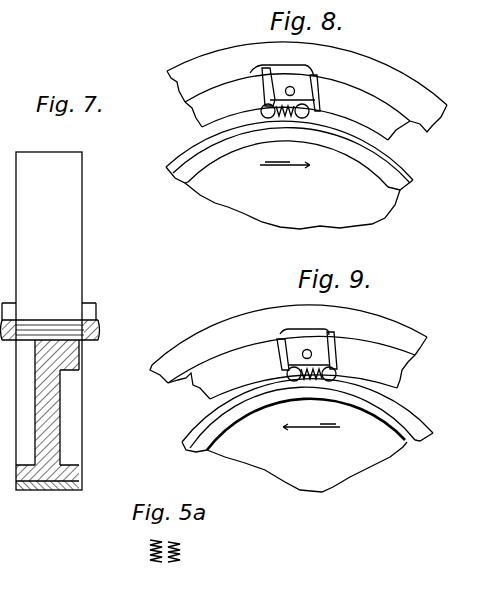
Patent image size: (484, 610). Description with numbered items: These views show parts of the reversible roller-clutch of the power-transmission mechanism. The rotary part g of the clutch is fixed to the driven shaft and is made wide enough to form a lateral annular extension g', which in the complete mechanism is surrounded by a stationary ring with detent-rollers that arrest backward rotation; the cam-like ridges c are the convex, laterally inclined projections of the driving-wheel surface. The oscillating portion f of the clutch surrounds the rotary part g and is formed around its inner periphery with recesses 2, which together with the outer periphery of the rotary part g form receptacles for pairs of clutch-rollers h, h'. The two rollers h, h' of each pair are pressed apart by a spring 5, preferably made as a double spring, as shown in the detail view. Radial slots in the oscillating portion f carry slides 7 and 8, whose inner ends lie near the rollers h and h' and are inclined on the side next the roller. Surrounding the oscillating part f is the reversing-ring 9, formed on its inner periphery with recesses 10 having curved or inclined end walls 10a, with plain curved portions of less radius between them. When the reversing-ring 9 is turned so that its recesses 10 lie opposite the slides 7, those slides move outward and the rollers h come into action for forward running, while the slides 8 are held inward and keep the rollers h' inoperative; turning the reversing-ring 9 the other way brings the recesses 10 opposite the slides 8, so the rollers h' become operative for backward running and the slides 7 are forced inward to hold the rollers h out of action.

In FIG. 7, the rotary part of the clutch g is at (49, 321).
In FIG. 8, the rotary part of the clutch g is at (289, 175).
In FIG. 9, the rotary part of the clutch g is at (307, 435).
In FIG. 7, the lateral annular extension g' is at (30, 501).
In FIG. 7, the cam-like ridges or projections c is at (50, 321).
In FIG. 8, the reversing-ring 9 is at (307, 87).
In FIG. 9, the reversing-ring 9 is at (290, 333).
In FIG. 8, the oscillating portion of the clutch f is at (297, 116).
In FIG. 9, the oscillating portion of the clutch f is at (282, 381).
In FIG. 8, the recesses 10 is at (288, 65).
In FIG. 9, the recesses 10 is at (322, 330).
In FIG. 8, the curved or inclined end walls 10a is at (311, 70).
In FIG. 9, the curved or inclined end walls 10a is at (348, 333).
In FIG. 8, the slides 7 is at (262, 88).
In FIG. 9, the slides 7 is at (277, 352).
In FIG. 8, the slides 8 is at (318, 93).
In FIG. 9, the slides 8 is at (336, 335).
In FIG. 8, the recesses 2 is at (277, 110).
In FIG. 9, the recesses 2 is at (310, 365).
In FIG. 8, the clutch-roller h is at (253, 139).
In FIG. 9, the clutch-roller h is at (282, 401).
In FIG. 8, the clutch-roller h' is at (331, 113).
In FIG. 9, the clutch-roller h' is at (354, 371).
In FIG. 8, the spring 5 is at (278, 118).
In FIG. 9, the spring 5 is at (317, 376).
In FIG. 5A, the spring 5 is at (181, 546).